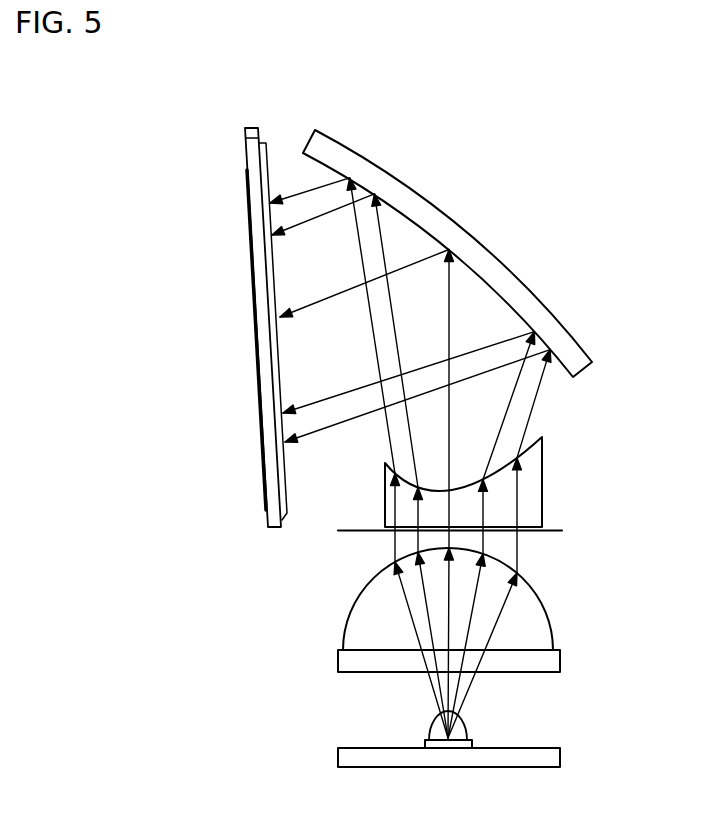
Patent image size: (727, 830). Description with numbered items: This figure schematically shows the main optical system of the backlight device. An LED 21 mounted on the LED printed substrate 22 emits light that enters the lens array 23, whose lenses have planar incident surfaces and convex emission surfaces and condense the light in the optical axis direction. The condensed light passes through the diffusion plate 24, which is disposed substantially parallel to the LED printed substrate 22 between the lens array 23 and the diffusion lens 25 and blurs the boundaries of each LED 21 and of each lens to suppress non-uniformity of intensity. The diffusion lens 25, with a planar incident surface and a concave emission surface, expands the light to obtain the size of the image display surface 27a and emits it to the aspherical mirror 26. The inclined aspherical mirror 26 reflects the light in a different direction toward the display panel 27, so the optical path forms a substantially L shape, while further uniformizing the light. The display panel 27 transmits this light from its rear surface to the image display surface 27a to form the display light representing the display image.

The LED 21 is at (466, 723).
The LED printed substrate 22 is at (560, 755).
The lens array 23 is at (543, 620).
The diffusion plate 24 is at (556, 532).
The diffusion lens 25 is at (542, 460).
The aspherical mirror 26 is at (497, 257).
The display panel 27 is at (270, 513).
The image display surface 27a is at (253, 314).